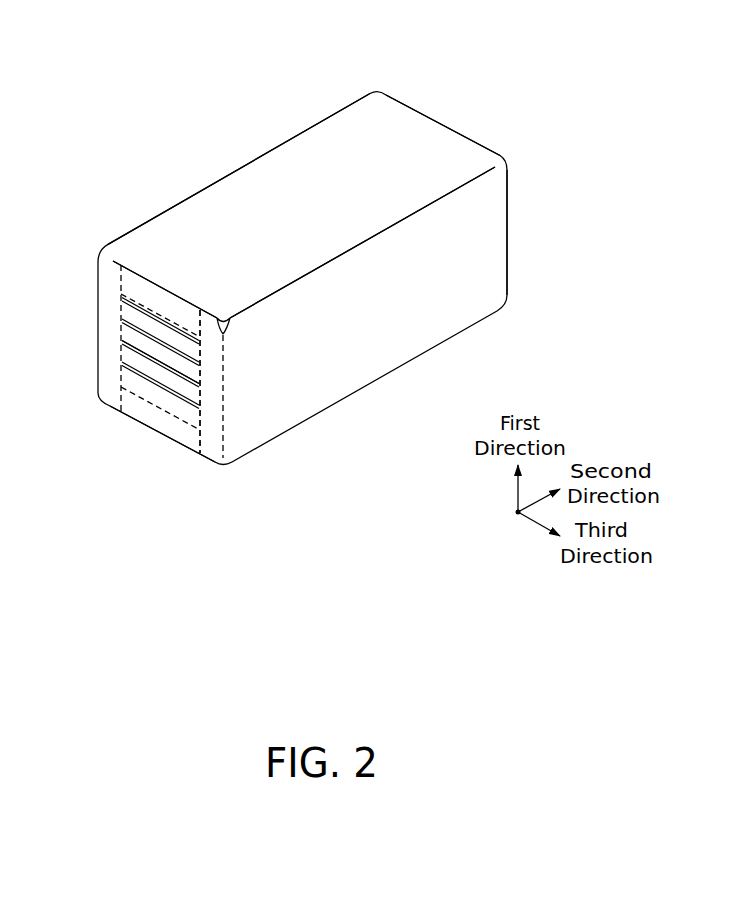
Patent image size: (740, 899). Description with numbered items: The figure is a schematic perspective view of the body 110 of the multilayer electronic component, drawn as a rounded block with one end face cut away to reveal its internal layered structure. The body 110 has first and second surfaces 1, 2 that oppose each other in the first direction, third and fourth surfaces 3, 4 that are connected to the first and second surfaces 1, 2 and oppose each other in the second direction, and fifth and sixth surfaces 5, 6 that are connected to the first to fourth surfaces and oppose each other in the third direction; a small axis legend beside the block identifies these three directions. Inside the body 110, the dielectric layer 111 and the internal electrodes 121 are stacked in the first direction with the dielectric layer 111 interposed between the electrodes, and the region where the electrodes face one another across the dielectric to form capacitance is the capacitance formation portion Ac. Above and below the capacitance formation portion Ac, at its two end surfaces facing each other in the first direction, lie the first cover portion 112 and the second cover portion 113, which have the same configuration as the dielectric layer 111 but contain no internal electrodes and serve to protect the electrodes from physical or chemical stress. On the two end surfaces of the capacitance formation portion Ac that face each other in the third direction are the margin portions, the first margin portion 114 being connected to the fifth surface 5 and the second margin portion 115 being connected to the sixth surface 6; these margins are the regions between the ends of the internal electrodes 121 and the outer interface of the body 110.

The body 110 is at (112, 36).
The dielectric layer 111 is at (122, 358).
The first cover portion 112 is at (120, 270).
The second cover portion 113 is at (120, 403).
The first margin portion 114 is at (107, 378).
The second margin portion 115 is at (210, 448).
The first internal electrode 121 is at (122, 313).
The capacitance formation portion Ac is at (205, 398).
The first surface 1 is at (328, 384).
The second surface 2 is at (330, 157).
The third surface 3 is at (160, 430).
The fourth surface 4 is at (433, 122).
The fifth surface 5 is at (196, 196).
The sixth surface 6 is at (443, 301).